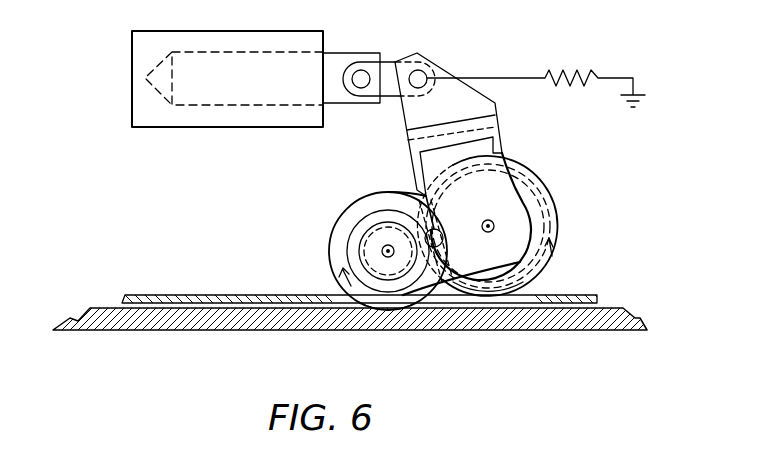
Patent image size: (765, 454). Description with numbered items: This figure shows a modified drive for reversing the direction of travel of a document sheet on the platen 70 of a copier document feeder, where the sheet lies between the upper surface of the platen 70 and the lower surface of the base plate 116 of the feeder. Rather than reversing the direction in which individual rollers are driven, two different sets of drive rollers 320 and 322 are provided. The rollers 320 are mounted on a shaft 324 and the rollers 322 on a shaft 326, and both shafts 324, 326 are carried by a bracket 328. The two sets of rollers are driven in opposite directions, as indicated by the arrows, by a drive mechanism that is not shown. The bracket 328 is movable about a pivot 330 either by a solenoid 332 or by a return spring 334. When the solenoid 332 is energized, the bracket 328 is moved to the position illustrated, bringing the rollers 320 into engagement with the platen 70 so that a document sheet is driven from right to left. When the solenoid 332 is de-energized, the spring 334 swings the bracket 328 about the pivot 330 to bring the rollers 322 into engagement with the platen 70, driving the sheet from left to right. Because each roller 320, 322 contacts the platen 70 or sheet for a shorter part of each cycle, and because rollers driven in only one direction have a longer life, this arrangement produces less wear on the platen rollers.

The platen 70 is at (215, 318).
The base plate 116 is at (173, 294).
The drive rollers 320 is at (390, 312).
The drive rollers 322 is at (500, 312).
The shaft 324 is at (382, 252).
The shaft 326 is at (495, 223).
The bracket 328 is at (431, 159).
The pivot 330 is at (443, 231).
The solenoid 332 is at (218, 117).
The return spring 334 is at (561, 73).